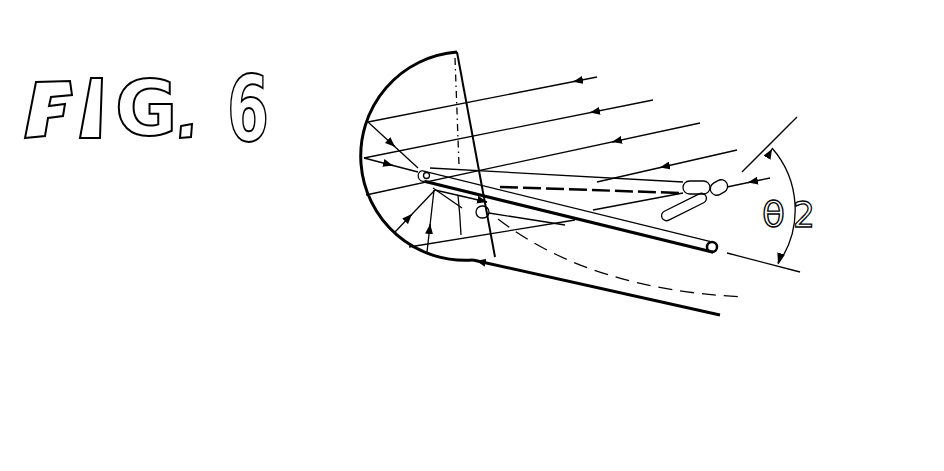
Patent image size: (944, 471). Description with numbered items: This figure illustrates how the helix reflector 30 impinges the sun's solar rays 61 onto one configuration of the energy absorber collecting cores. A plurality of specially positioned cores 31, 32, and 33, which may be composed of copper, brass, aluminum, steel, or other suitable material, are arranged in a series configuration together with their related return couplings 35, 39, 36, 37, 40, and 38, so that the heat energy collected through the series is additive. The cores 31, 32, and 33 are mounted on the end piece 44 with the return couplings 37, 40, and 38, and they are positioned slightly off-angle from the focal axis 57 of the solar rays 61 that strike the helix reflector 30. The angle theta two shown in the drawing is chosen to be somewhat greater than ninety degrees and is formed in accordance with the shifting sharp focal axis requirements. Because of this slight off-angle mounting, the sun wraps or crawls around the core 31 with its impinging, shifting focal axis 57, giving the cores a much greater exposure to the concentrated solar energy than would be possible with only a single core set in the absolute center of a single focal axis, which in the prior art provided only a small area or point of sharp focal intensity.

The helix reflector 30 is at (412, 248).
The collecting core 31 is at (641, 218).
The collecting core 32 is at (520, 215).
The collecting core 33 is at (618, 185).
The return coupling 35 is at (692, 222).
The return coupling 36 is at (702, 198).
The return coupling 37 is at (417, 182).
The return coupling 38 is at (445, 195).
The return coupling 39 is at (705, 205).
The return coupling 40 is at (420, 205).
The end piece 44 is at (415, 90).
The focal axis 57 is at (612, 218).
The solar rays 61 is at (553, 83).